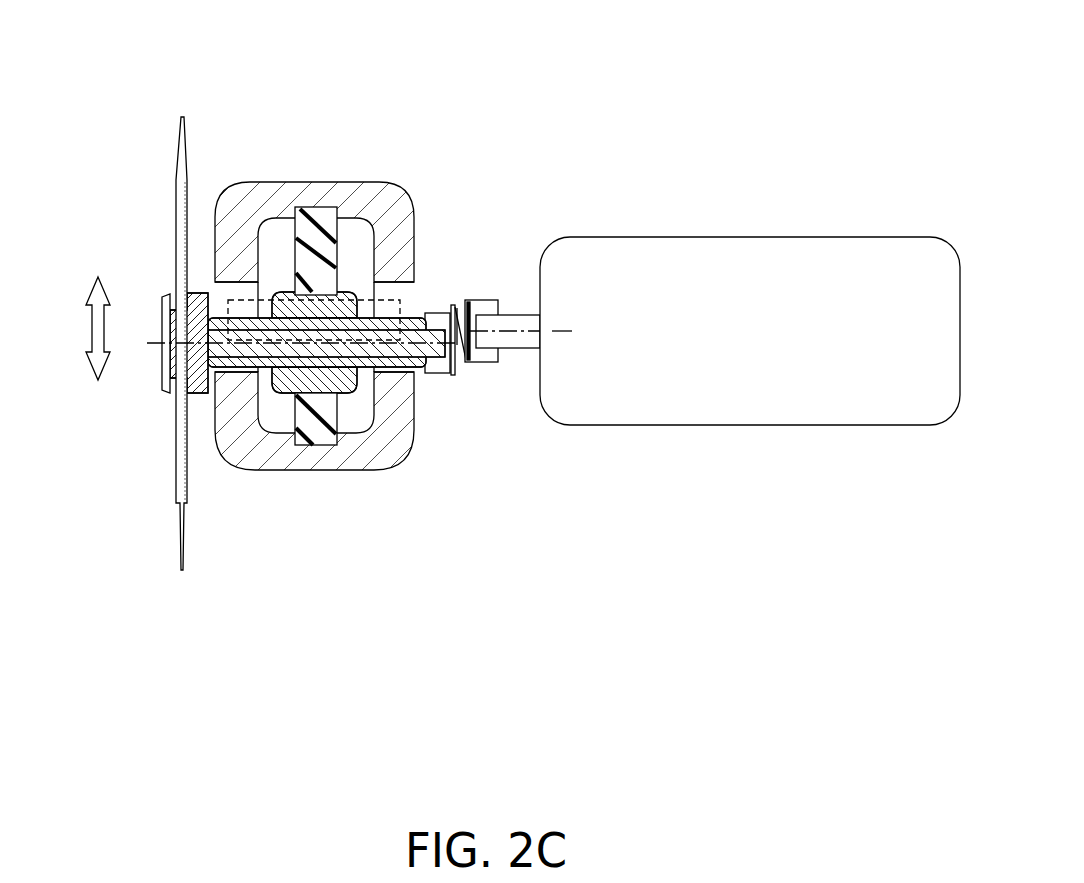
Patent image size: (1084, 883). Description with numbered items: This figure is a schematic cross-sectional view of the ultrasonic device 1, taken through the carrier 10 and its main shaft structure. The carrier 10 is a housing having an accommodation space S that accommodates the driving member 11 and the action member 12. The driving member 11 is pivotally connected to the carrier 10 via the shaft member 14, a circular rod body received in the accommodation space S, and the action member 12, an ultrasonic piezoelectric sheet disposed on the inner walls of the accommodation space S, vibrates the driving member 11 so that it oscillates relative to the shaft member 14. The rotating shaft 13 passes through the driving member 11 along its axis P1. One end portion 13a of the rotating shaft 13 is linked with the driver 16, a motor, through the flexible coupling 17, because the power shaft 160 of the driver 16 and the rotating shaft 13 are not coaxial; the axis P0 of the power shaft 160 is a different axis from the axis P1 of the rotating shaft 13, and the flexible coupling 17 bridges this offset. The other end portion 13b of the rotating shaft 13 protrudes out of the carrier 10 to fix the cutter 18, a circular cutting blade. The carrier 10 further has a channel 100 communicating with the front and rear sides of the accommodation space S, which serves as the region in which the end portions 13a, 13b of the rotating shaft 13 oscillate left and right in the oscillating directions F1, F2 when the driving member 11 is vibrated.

The ultrasonic device 1 is at (577, 82).
The carrier 10 is at (363, 458).
The channel 100 is at (237, 283).
The driving member 11 is at (286, 392).
The action member 12 is at (320, 215).
The rotating shaft 13 is at (250, 352).
The end portion of the rotating shaft 13a is at (441, 355).
The other end portion of the rotating shaft 13b is at (177, 325).
The shaft member 14 is at (365, 300).
The driver 16 is at (868, 248).
The power shaft 160 is at (513, 315).
The flexible coupling 17 is at (480, 306).
The cutter 18 is at (180, 445).
The accommodation space S is at (275, 230).
The axis of the power shaft P0 is at (562, 331).
The axis of the rotating shaft P1 is at (170, 343).
The oscillating direction F1 is at (88, 283).
The oscillating direction F2 is at (89, 368).